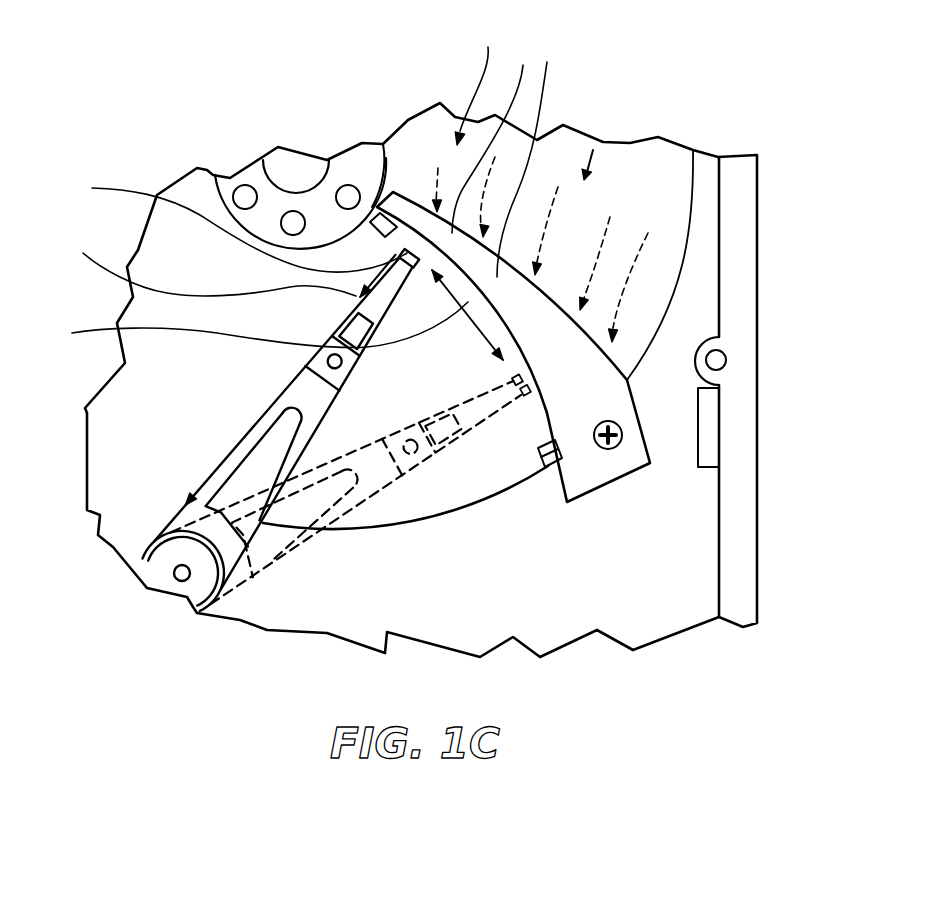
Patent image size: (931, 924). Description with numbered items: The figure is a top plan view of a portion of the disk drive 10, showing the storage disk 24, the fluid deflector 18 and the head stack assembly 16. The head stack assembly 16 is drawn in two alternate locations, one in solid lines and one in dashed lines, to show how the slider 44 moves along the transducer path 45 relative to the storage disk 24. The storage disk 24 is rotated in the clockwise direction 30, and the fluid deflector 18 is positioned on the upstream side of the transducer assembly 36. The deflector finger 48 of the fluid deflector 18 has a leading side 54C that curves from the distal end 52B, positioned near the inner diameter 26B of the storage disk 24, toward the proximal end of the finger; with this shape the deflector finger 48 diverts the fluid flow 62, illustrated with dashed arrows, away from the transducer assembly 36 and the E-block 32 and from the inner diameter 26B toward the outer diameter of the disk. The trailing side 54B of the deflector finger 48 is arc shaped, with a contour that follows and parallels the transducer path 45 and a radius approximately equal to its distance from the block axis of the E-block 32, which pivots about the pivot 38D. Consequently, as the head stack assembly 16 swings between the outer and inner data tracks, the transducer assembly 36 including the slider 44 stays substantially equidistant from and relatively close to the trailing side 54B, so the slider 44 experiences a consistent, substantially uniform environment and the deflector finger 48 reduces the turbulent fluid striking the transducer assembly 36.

The disk drive 10 is at (708, 126).
The head stack assembly 16 is at (170, 504).
The fluid deflector 18 is at (535, 169).
The storage disk 24 is at (485, 81).
The inner diameter 26B is at (180, 177).
The clockwise direction 30 is at (598, 152).
The E-block 32 is at (247, 437).
The transducer assembly 36 is at (199, 261).
The arm pivot 38D is at (176, 578).
The slider 44 is at (231, 221).
The transducer path 45 is at (247, 327).
The deflector finger 48 is at (499, 135).
The distal end 52B is at (395, 197).
The trailing side 54B is at (549, 413).
The leading side 54C is at (515, 267).
The fluid flow 62 is at (605, 281).